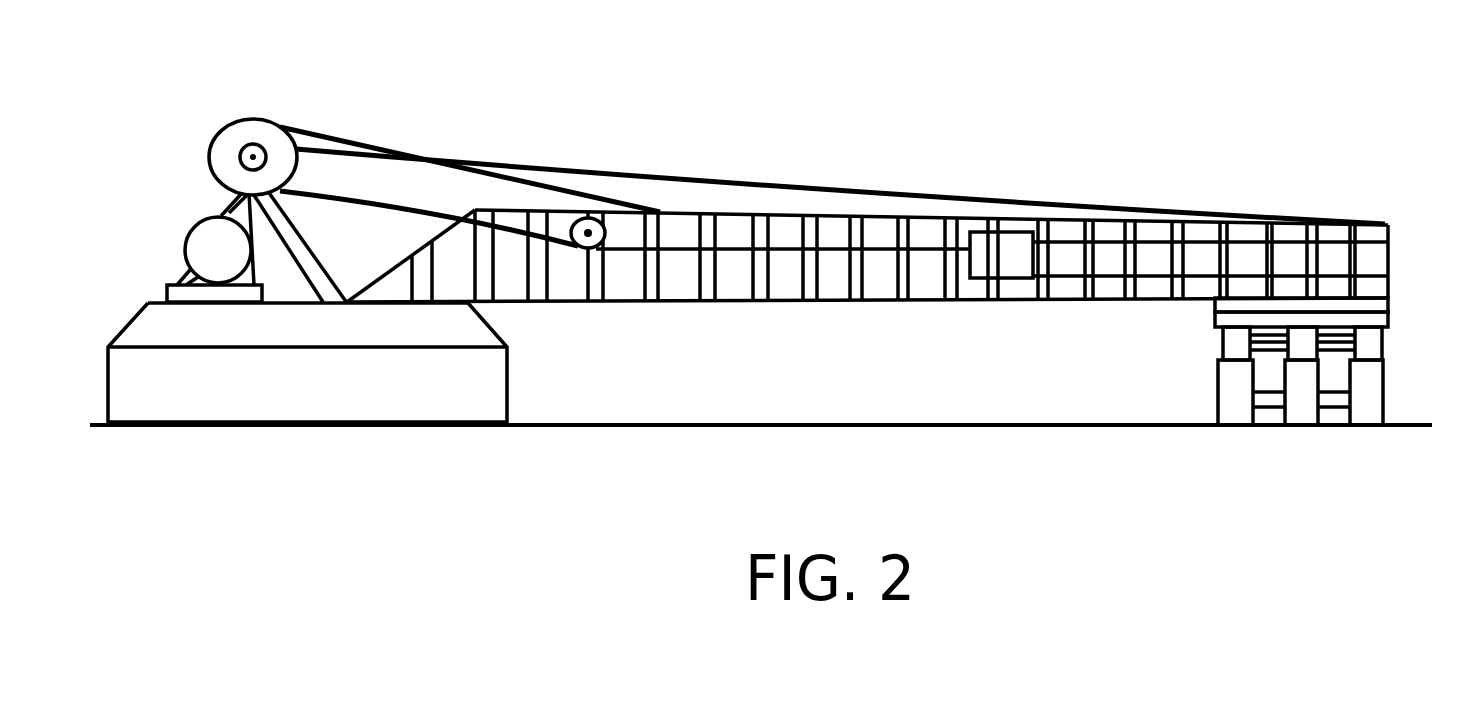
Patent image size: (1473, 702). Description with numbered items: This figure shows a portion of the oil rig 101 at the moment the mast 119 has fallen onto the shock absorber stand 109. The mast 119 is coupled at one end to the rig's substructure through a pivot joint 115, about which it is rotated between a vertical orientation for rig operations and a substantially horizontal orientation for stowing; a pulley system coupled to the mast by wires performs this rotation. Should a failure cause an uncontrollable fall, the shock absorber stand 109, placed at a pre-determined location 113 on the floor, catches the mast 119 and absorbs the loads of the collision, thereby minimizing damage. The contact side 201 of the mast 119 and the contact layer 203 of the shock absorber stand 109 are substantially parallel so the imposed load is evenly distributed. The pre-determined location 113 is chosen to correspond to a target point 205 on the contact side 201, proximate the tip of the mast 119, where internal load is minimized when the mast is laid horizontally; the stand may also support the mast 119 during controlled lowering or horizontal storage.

The oil rig 101 is at (682, 82).
The shock absorber stand 109 is at (1408, 302).
The pre-determined location 113 is at (1303, 427).
The pivot joint 115 is at (347, 303).
The mast 119 is at (627, 303).
The contact side 201 is at (1289, 297).
The contact layer 203 is at (1215, 303).
The target point 205 is at (1357, 297).